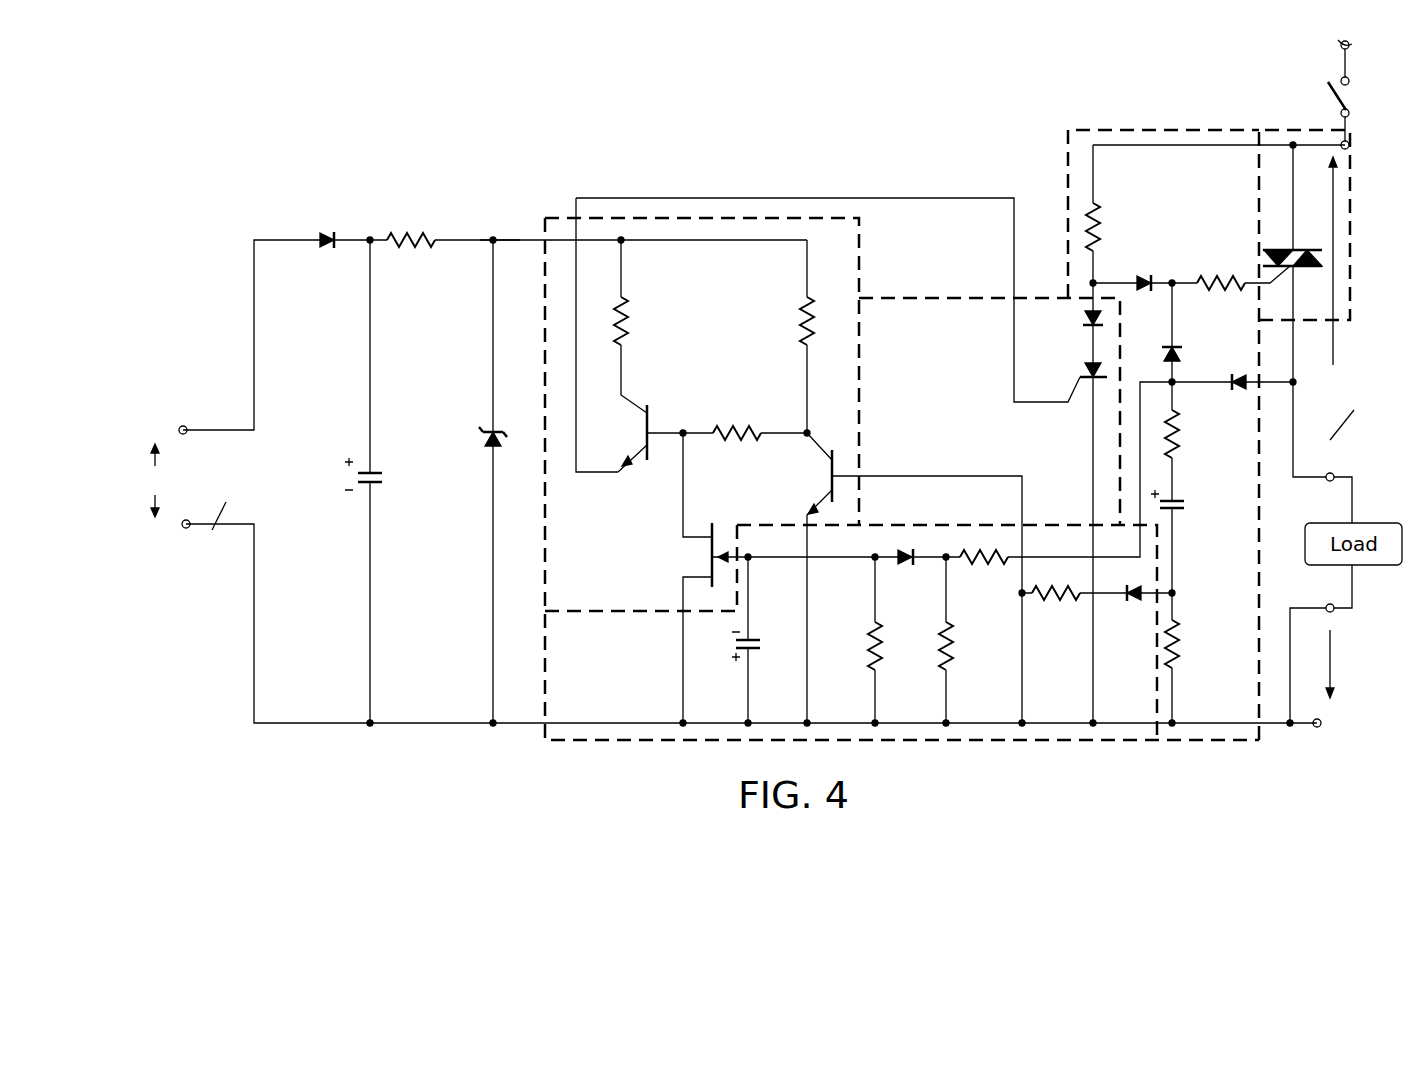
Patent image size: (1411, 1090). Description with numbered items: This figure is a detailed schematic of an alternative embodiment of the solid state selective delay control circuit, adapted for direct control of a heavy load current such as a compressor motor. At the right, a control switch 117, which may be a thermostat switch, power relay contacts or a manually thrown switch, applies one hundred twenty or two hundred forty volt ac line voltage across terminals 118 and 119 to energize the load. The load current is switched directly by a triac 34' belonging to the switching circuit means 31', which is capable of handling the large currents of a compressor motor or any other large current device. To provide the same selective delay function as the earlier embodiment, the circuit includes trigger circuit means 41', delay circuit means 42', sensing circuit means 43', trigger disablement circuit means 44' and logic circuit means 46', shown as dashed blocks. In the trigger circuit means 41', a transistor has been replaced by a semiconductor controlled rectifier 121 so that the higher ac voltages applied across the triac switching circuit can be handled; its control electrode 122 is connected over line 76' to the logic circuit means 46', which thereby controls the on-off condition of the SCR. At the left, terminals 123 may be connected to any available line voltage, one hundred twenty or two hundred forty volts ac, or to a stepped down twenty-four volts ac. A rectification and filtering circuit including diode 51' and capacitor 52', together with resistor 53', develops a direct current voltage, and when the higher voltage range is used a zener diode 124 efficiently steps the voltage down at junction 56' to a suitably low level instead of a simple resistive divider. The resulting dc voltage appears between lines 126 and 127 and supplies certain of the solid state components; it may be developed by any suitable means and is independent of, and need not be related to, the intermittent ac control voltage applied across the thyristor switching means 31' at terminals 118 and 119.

The diode 51' is at (348, 216).
The resistor 53' is at (428, 215).
The junction 56' is at (510, 224).
The capacitor 52' is at (393, 473).
The zener diode 124 is at (488, 434).
The terminals 123 is at (168, 440).
The line 127 is at (510, 727).
The line 126 is at (683, 240).
The line 76' is at (828, 282).
The logic circuit means 46' is at (866, 367).
The trigger disablement circuit means 44' is at (989, 387).
The delay circuit means 42' is at (902, 501).
The sensing circuit means 43' is at (960, 637).
The trigger circuit means 41' is at (1163, 274).
The semi-conductor controlled rectifier (SCR) 121 is at (1080, 376).
The control electrode 122 is at (1068, 396).
The switching circuit means 31' is at (1305, 415).
The triac 34' is at (1297, 238).
The control switch 117 is at (1348, 96).
The terminal 118 is at (1350, 145).
The terminal 119 is at (1310, 727).